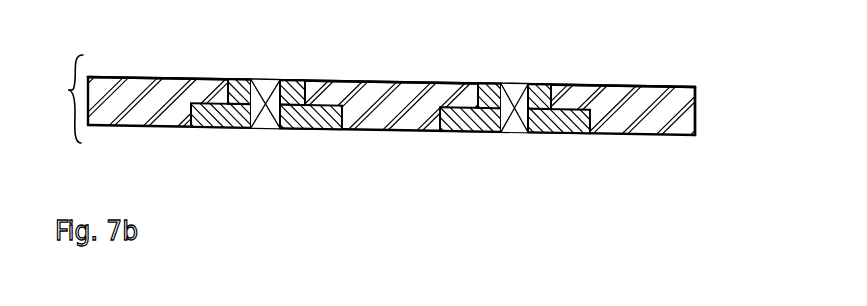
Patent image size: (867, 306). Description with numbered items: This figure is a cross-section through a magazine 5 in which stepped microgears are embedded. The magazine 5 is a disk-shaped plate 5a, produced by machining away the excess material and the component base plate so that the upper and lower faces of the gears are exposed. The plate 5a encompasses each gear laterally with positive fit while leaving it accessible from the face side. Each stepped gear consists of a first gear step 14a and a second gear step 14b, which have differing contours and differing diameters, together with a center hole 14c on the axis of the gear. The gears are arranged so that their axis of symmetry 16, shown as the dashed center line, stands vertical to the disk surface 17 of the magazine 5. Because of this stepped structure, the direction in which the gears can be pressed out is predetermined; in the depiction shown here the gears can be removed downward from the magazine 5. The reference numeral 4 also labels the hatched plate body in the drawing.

The plate 4 is at (645, 103).
The magazine 5 is at (62, 99).
The disk-shaped plate 5a is at (688, 117).
The gear step 14a is at (215, 126).
The gear step 14b is at (297, 79).
The center hole 14c is at (268, 79).
The axis of symmetry 16 is at (516, 153).
The disk surface 17 is at (113, 69).